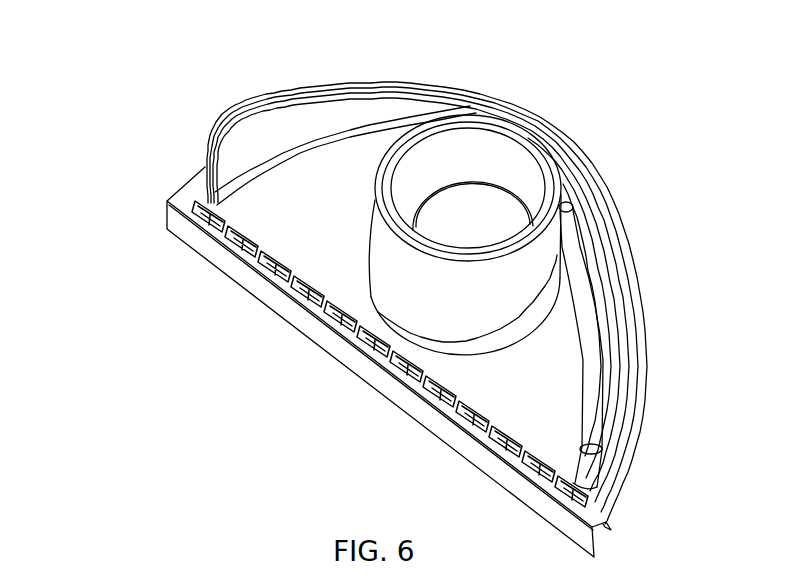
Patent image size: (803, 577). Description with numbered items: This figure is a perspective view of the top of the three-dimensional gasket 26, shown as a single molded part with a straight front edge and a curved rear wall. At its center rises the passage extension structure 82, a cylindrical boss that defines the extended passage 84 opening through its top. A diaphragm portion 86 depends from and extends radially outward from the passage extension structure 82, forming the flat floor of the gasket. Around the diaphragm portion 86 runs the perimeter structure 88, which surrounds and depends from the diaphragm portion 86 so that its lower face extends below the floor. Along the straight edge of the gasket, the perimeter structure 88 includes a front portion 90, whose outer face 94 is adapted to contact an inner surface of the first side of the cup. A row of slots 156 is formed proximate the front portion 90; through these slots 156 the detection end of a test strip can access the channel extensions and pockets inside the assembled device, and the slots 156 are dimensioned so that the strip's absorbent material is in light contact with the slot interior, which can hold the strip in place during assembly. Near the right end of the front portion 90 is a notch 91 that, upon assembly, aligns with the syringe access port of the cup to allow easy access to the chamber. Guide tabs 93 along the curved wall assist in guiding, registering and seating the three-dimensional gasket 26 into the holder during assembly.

The three-dimensional gasket 26 is at (93, 70).
The guide tabs 93 is at (287, 92).
The extended passage 84 is at (465, 225).
The diaphragm portion 86 is at (321, 226).
The passage extension structure 82 is at (390, 288).
The slots 156 is at (307, 300).
The outer face 94 is at (362, 372).
The front portion 90 is at (398, 404).
The perimeter structure 88 is at (626, 494).
The notch 91 is at (605, 530).